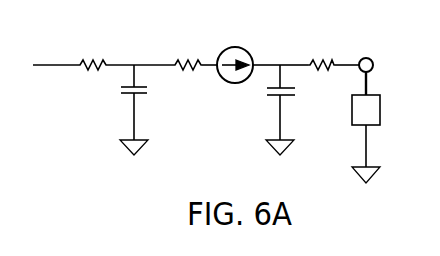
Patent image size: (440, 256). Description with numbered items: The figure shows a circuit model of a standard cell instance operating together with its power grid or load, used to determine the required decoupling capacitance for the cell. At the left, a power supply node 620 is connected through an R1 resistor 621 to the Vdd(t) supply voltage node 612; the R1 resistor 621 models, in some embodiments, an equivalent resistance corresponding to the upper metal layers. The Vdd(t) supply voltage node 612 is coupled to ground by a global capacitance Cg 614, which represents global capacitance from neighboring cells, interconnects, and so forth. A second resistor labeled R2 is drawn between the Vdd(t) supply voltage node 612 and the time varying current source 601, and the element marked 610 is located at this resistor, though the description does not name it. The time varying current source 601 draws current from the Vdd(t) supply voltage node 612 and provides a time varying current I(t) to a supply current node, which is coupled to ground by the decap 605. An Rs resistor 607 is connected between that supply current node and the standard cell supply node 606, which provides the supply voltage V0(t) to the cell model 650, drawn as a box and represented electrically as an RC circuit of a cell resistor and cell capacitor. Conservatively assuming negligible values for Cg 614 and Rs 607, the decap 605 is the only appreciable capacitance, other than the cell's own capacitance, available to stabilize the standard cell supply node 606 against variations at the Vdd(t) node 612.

The power supply node 620 is at (48, 67).
The R1 resistor 621 is at (86, 69).
The Vdd(t) supply voltage node 612 is at (139, 67).
The global capacitance (Cg) 614 is at (130, 121).
The resistor R2 610 is at (193, 71).
The time varying current source 601 is at (241, 68).
The decap 605 is at (289, 110).
The Rs resistor 607 is at (319, 71).
The standard cell supply node 606 is at (382, 66).
The cell model 650 is at (383, 127).